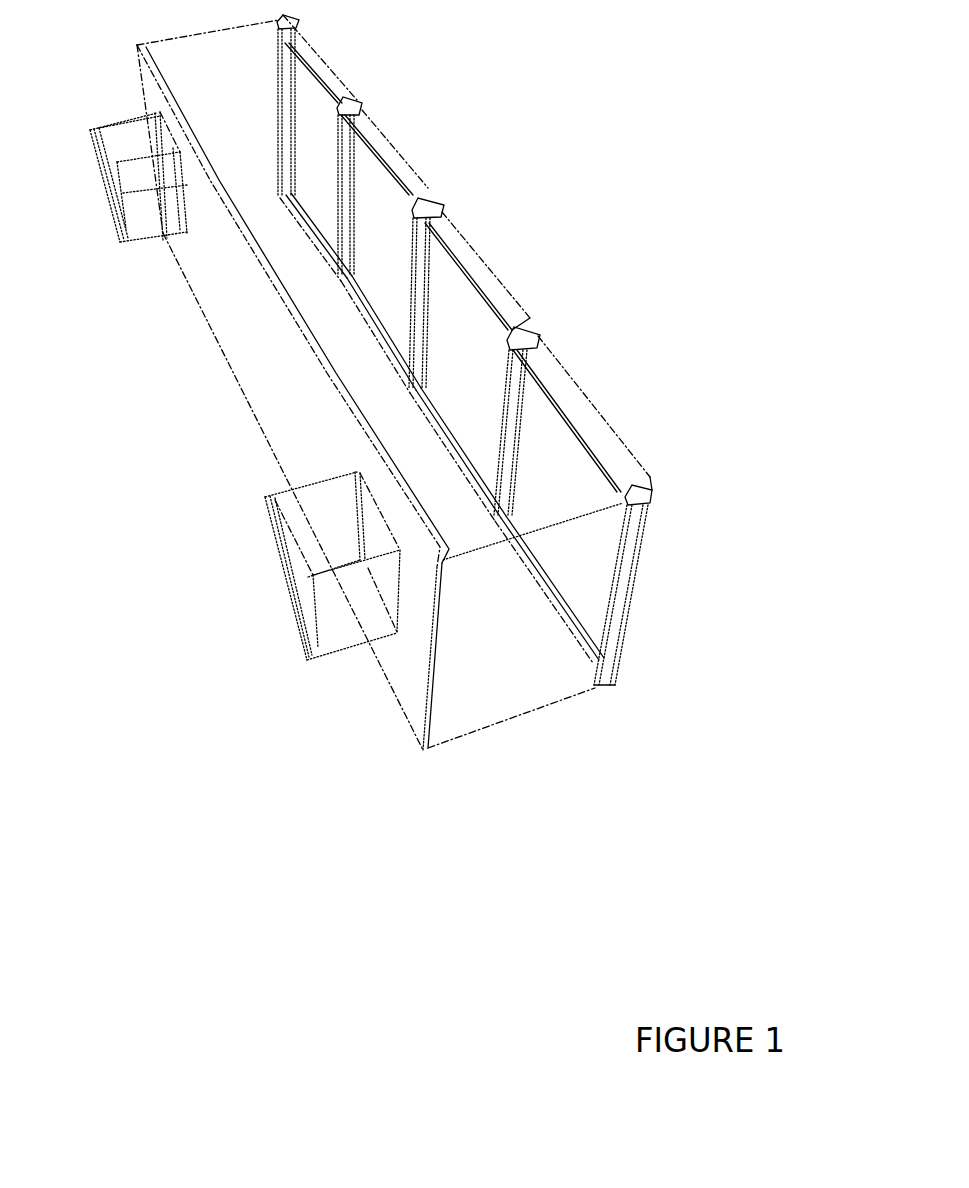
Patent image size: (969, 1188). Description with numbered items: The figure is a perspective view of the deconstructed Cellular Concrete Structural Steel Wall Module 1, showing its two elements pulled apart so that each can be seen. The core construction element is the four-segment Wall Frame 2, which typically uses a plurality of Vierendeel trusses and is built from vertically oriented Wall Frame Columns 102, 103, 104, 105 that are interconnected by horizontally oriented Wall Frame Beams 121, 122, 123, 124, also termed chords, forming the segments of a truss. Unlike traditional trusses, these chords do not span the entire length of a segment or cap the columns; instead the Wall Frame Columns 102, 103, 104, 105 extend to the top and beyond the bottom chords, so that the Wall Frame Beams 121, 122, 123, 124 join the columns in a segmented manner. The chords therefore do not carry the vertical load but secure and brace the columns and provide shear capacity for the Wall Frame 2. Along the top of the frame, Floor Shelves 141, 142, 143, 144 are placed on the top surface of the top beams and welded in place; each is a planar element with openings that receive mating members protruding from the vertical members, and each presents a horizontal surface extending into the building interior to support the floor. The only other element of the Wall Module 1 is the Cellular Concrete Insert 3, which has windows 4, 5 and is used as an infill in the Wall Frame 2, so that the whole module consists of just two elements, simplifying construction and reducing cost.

The Cellular Concrete Structural Steel Wall Module 1 is at (545, 148).
The Wall Frame 2 is at (668, 507).
The Cellular Concrete Insert 3 is at (217, 340).
The window 4 is at (88, 130).
The window 5 is at (265, 560).
The Wall Frame Column 102 is at (342, 175).
The Wall Frame Column 103 is at (412, 257).
The Wall Frame Column 104 is at (503, 373).
The Wall Frame Column 105 is at (617, 542).
The Wall Frame Beam 121 is at (325, 250).
The Wall Frame Beam 122 is at (390, 347).
The Wall Frame Beam 123 is at (458, 455).
The Wall Frame Beam 124 is at (547, 600).
The Floor Shelf 141 is at (315, 63).
The Floor Shelf 142 is at (390, 153).
The Floor Shelf 143 is at (477, 270).
The Floor Shelf 144 is at (587, 410).